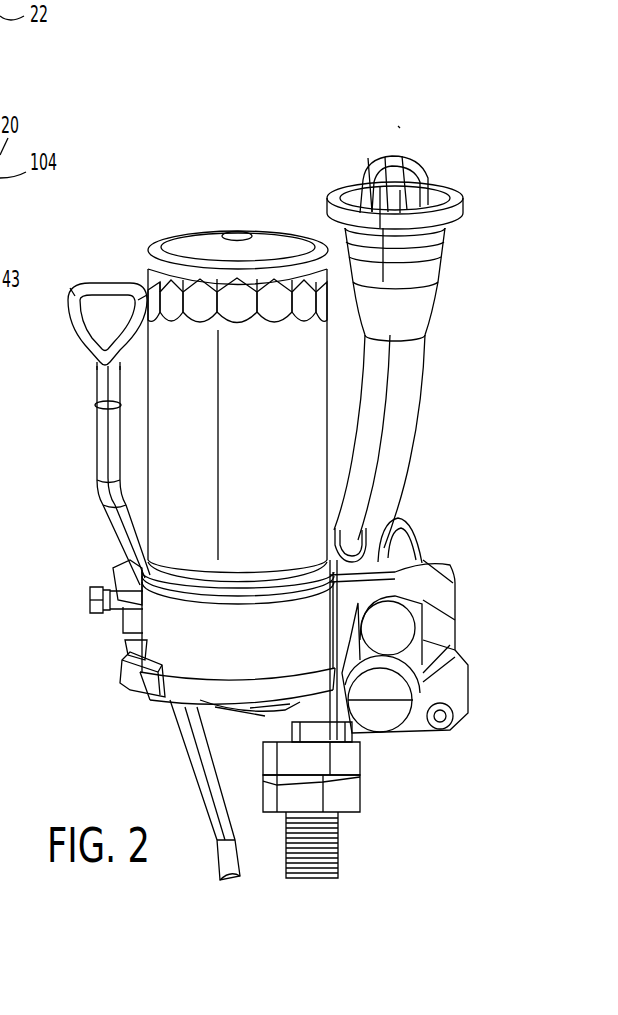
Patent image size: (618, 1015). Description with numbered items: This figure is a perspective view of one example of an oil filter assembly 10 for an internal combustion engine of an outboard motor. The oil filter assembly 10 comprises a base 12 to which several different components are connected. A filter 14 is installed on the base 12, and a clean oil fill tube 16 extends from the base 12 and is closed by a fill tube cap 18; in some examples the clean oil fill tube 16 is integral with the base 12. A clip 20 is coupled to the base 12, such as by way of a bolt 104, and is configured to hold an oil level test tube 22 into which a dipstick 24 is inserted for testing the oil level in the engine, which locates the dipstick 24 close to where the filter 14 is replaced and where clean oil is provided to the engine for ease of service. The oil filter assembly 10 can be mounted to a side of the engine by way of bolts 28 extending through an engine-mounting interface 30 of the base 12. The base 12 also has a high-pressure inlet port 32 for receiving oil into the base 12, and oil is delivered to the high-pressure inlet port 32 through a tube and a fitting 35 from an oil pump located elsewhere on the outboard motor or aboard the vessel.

The oil filter assembly 10 is at (397, 128).
The base 12 is at (160, 637).
The filter 14 is at (200, 236).
The clean oil fill tube 16 is at (425, 378).
The fill tube cap 18 is at (452, 196).
The clip 20 is at (118, 574).
The oil level test tube 22 is at (97, 460).
The dipstick 24 is at (70, 330).
The bolts 28 is at (445, 728).
The engine-mounting interface 30 is at (415, 530).
The high-pressure inlet port 32 is at (360, 797).
The fitting 35 is at (340, 845).
The bolt 104 is at (88, 597).